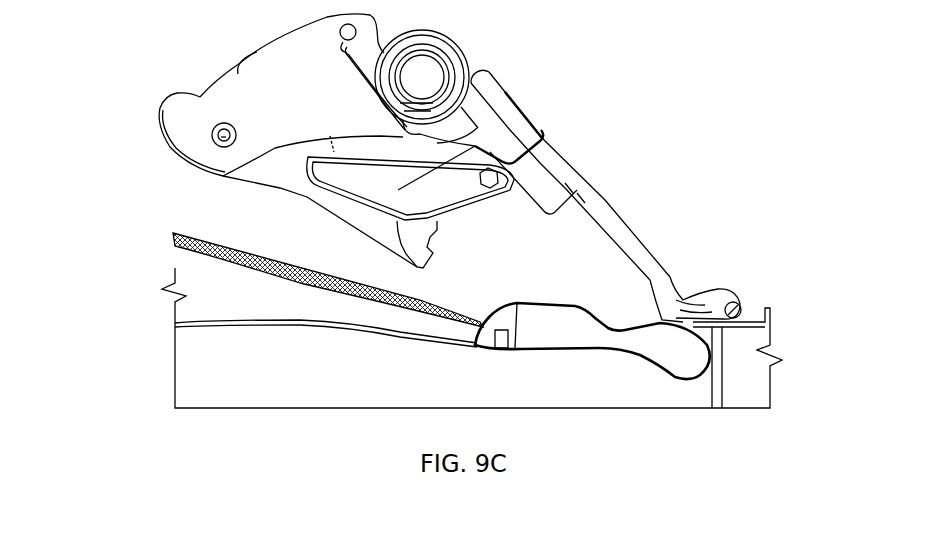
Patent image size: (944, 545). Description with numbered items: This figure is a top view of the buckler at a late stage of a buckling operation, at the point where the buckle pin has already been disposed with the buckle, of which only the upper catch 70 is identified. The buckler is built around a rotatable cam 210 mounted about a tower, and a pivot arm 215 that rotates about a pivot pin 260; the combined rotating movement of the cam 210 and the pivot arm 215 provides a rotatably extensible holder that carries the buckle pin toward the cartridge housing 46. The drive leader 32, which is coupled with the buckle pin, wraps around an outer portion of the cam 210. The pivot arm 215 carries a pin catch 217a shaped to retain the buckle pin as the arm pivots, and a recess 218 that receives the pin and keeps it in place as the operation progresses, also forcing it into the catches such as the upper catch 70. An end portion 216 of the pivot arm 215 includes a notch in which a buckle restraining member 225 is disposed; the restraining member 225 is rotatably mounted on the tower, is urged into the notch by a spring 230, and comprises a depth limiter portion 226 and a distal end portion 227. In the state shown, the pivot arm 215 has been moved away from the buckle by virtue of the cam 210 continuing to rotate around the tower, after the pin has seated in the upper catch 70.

The cam 210 is at (287, 63).
The spring 230 is at (400, 122).
The pivot arm 215 is at (508, 121).
The buckle restraining member 225 is at (596, 200).
The depth limiter portion 226 is at (676, 285).
The distal end portion 227 is at (738, 300).
The end portion 216 is at (528, 210).
The pin catch 217a is at (382, 255).
The recess 218 is at (434, 247).
The pivot pin 260 is at (212, 136).
The drive leader 32 is at (203, 240).
The cartridge housing 46 is at (278, 390).
The upper catch 70 is at (679, 355).